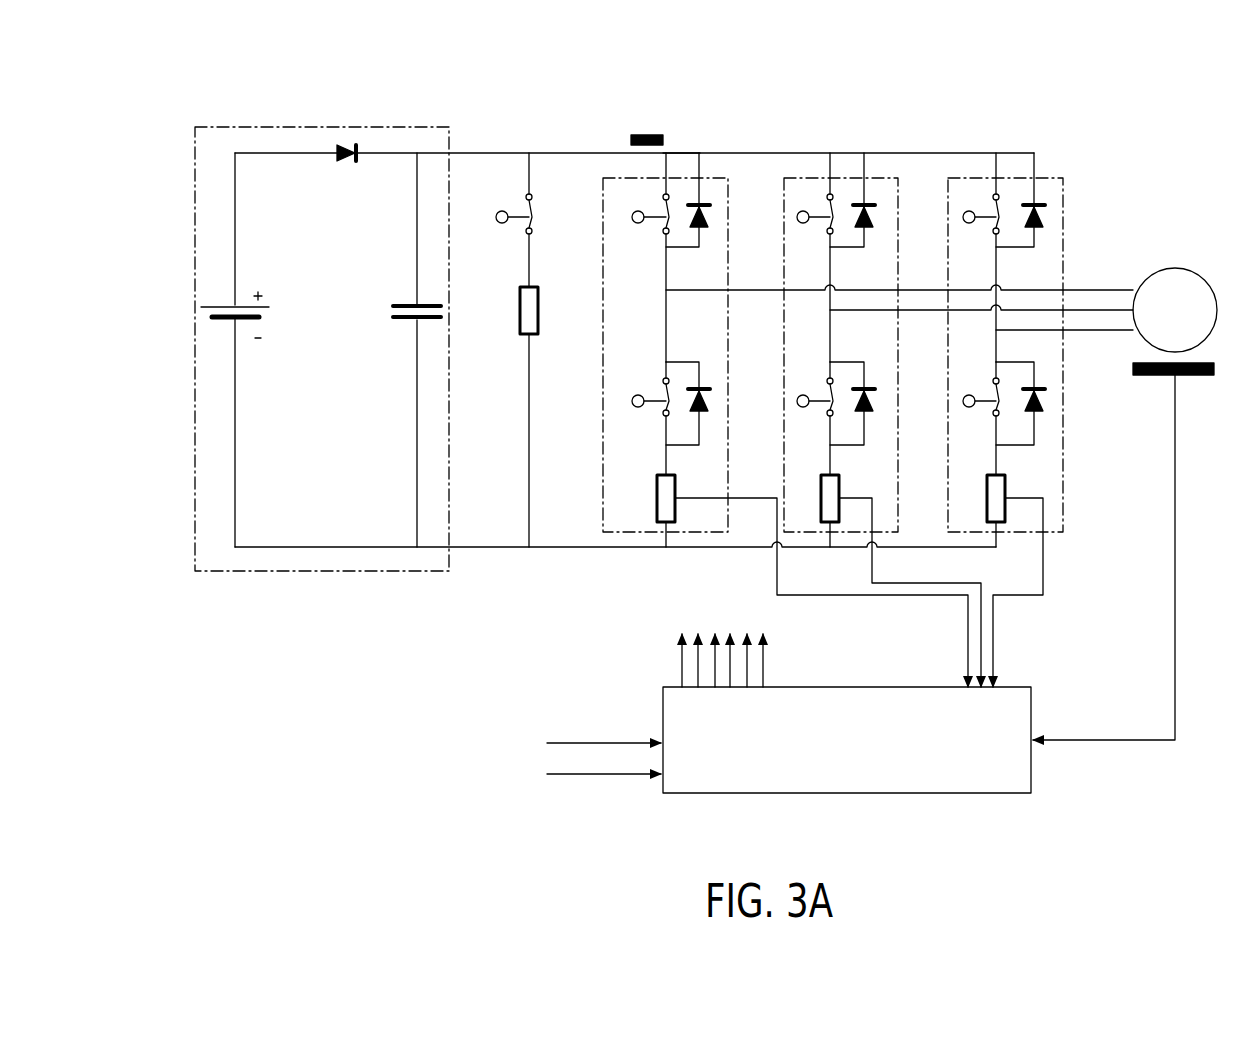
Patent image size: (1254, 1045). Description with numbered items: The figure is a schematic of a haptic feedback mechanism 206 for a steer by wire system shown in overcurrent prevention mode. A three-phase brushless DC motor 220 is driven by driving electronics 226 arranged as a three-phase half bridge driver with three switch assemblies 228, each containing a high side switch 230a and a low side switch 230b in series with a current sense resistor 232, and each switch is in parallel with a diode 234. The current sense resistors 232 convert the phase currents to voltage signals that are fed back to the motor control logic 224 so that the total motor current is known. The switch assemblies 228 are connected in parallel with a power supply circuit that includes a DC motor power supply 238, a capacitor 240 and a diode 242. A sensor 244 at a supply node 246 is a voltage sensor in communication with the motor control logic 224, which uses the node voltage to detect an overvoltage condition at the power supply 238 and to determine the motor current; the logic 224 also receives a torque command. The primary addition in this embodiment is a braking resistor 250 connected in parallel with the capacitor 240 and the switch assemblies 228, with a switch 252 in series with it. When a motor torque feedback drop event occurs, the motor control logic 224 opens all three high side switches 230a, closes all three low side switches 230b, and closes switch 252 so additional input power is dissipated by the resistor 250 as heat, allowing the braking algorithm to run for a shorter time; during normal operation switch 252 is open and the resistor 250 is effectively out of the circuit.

The haptic feedback mechanism 206 is at (1132, 108).
The DC motor 220 is at (1190, 280).
The motor control logic module 224 is at (970, 778).
The driving electronics 226 is at (230, 532).
The switch assembly 228 is at (880, 172).
The high side switch 230a is at (638, 224).
The low side switch 230b is at (636, 394).
The current sense resistor 232 is at (656, 497).
The diode 234 is at (708, 216).
The DC motor power supply 238 is at (226, 320).
The capacitor 240 is at (407, 305).
The diode 242 is at (346, 146).
The sensor 244 is at (647, 134).
The supply node 246 is at (666, 153).
The resistor 250 is at (518, 312).
The switch 252 is at (500, 225).